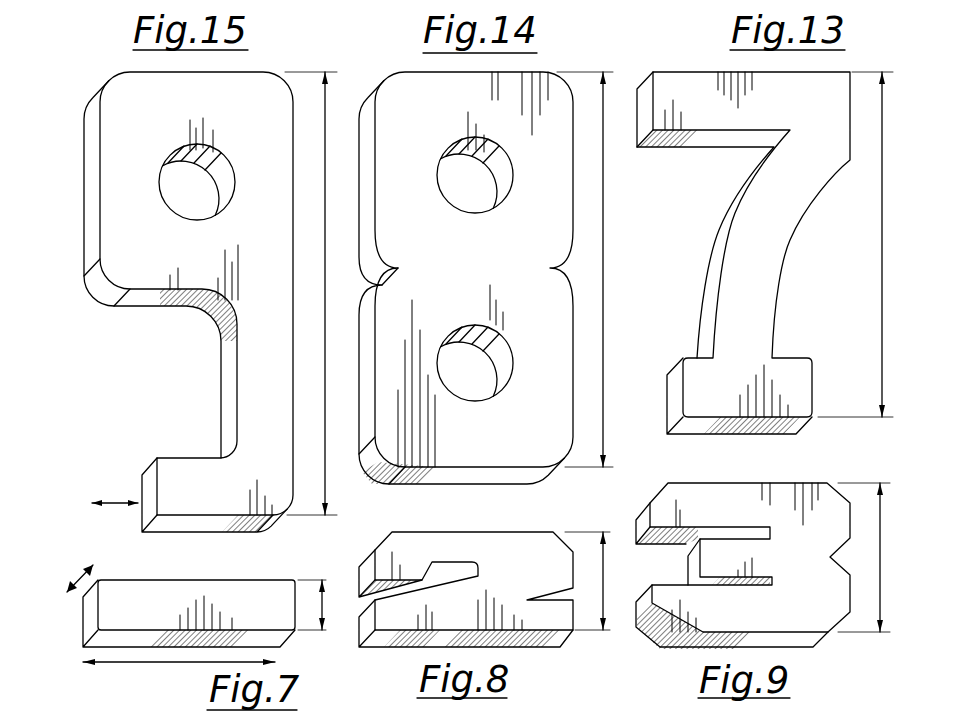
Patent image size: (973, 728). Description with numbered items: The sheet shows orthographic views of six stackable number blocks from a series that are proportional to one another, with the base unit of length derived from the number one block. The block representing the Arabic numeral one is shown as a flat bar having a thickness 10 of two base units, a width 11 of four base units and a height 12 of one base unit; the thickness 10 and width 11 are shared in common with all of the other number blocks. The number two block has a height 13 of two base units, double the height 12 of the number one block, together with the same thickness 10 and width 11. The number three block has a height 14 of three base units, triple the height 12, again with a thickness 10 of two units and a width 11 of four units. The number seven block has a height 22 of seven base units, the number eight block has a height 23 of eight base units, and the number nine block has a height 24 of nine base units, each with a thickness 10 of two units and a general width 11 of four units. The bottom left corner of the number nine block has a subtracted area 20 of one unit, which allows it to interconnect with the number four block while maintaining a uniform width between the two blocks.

In FIG. 7, the thickness 10 is at (80, 578).
In FIG. 7, the width 11 is at (177, 664).
In FIG. 7, the height 12 is at (323, 606).
In FIG. 8, the height 13 is at (603, 572).
In FIG. 9, the height 14 is at (880, 553).
In FIG. 15, the subtracted area 20 is at (120, 500).
In FIG. 13, the height 22 is at (882, 255).
In FIG. 14, the height 23 is at (603, 263).
In FIG. 15, the height 24 is at (325, 291).